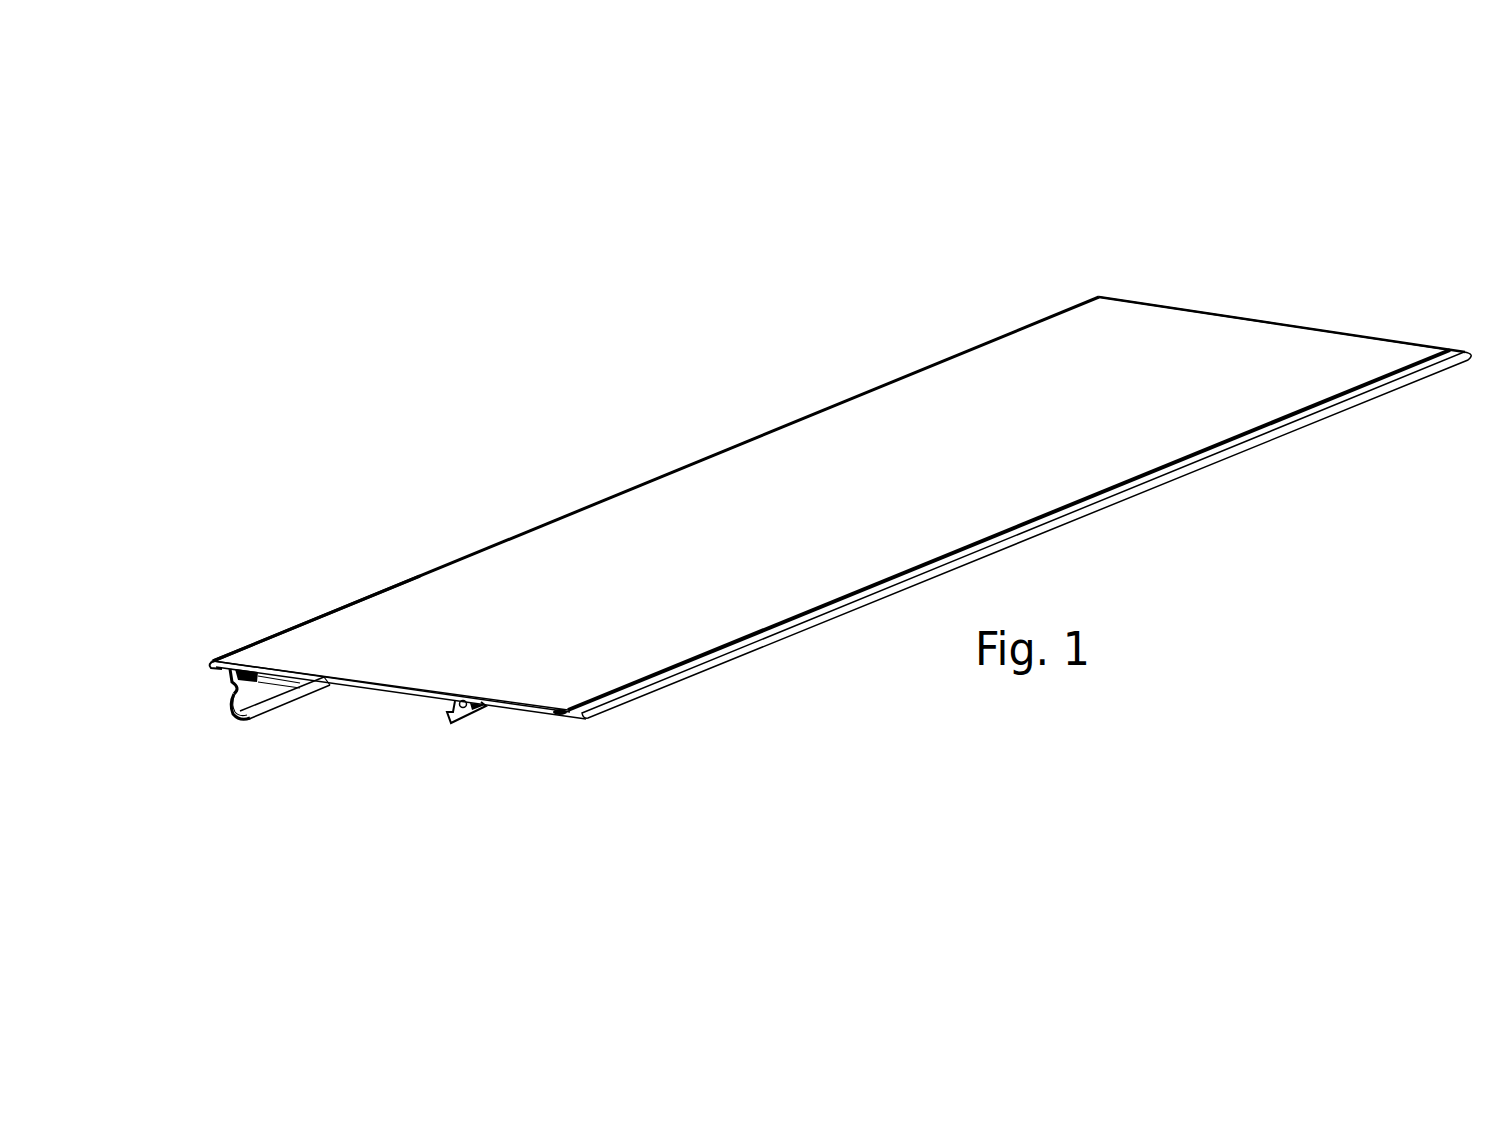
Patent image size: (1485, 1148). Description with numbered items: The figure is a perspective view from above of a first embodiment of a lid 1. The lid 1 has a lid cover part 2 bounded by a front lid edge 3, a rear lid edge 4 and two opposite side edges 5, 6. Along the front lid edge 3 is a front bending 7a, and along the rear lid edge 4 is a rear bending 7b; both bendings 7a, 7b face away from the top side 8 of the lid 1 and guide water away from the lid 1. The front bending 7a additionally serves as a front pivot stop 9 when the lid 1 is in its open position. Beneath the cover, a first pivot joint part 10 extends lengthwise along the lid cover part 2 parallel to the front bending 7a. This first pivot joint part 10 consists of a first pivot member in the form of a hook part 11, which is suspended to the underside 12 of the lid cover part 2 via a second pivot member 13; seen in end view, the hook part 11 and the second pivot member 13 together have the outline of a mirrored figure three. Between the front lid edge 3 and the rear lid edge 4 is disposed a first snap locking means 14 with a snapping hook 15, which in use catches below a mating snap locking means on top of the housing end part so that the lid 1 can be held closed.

The lid 1 is at (496, 311).
The lid cover part 2 is at (925, 425).
The front lid edge 3 is at (357, 598).
The rear lid edge 4 is at (1202, 462).
The side edge 5 is at (1217, 315).
The side edge 6 is at (355, 687).
The front bending 7a is at (487, 548).
The rear bending 7b is at (680, 675).
The top side 8 is at (748, 480).
The front pivot stop 9 is at (210, 663).
The first pivot joint part 10 is at (246, 719).
The hook part 11 is at (237, 721).
The underside 12 is at (421, 703).
The second pivot member 13 is at (237, 688).
The first snap locking means 14 is at (478, 700).
The snapping hook 15 is at (462, 699).